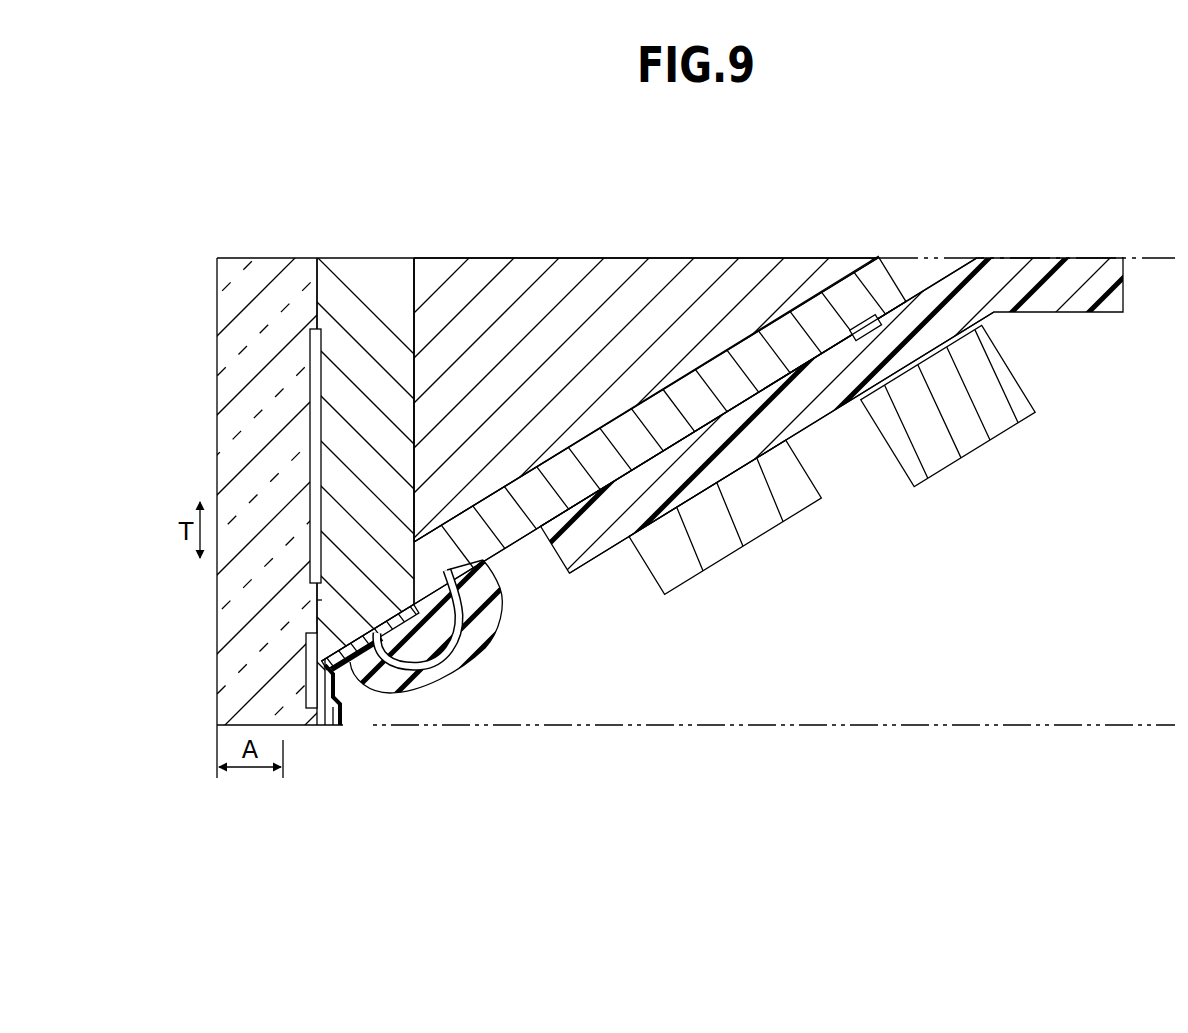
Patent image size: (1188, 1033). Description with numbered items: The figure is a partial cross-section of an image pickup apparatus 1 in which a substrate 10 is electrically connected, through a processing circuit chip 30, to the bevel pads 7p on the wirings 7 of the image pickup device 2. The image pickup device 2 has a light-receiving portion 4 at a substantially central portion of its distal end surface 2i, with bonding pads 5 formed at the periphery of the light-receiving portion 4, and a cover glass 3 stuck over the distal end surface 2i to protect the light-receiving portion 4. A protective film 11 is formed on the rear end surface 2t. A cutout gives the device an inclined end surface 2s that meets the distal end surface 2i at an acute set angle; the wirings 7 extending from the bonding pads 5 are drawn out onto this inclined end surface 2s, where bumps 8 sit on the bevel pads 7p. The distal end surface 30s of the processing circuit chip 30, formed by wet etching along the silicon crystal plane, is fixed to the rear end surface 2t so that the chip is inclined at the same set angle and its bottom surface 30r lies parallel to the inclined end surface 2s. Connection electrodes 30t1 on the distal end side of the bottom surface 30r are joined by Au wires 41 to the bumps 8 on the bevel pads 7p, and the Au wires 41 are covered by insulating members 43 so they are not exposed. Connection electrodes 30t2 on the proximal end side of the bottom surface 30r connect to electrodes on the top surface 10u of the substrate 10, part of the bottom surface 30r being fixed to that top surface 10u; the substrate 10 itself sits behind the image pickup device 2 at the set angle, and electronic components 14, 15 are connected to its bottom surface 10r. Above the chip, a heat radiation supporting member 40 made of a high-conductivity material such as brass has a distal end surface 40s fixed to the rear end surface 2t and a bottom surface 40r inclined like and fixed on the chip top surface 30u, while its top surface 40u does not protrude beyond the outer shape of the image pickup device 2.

The image pickup apparatus 1 is at (894, 519).
The image pickup device 2 is at (342, 268).
The distal end surface 2i is at (313, 305).
The inclined end surface 2s is at (381, 609).
The rear end surface 2t is at (411, 306).
The cover glass 3 is at (252, 270).
The light-receiving portion 4 is at (310, 402).
The bonding pads 5 is at (306, 681).
The wirings 7 is at (312, 600).
The bevel pads 7p is at (225, 612).
The bumps 8 is at (370, 680).
The substrate 10 is at (1046, 306).
The bottom surface of the substrate 10r is at (832, 426).
The top surface of the substrate 10u is at (825, 499).
The protective film 11 is at (335, 727).
The electronic component 14 is at (966, 436).
The electronic component 15 is at (711, 549).
The processing circuit chip 30 is at (805, 318).
The bottom surface of the processing circuit chip 30r is at (709, 427).
The distal end surface of the processing circuit chip 30s is at (424, 555).
The connection electrodes 30t1 is at (480, 590).
The connection electrodes 30t2 is at (861, 320).
The top surface of the processing circuit chip 30u is at (709, 356).
The heat radiation supporting member 40 is at (597, 276).
The bottom surface of the heat radiation supporting member 40r is at (646, 370).
The distal end surface of the heat radiation supporting member 40s is at (421, 342).
The top surface of the heat radiation supporting member 40u is at (634, 257).
The Au wires 41 is at (407, 676).
The insulating members 43 is at (466, 643).